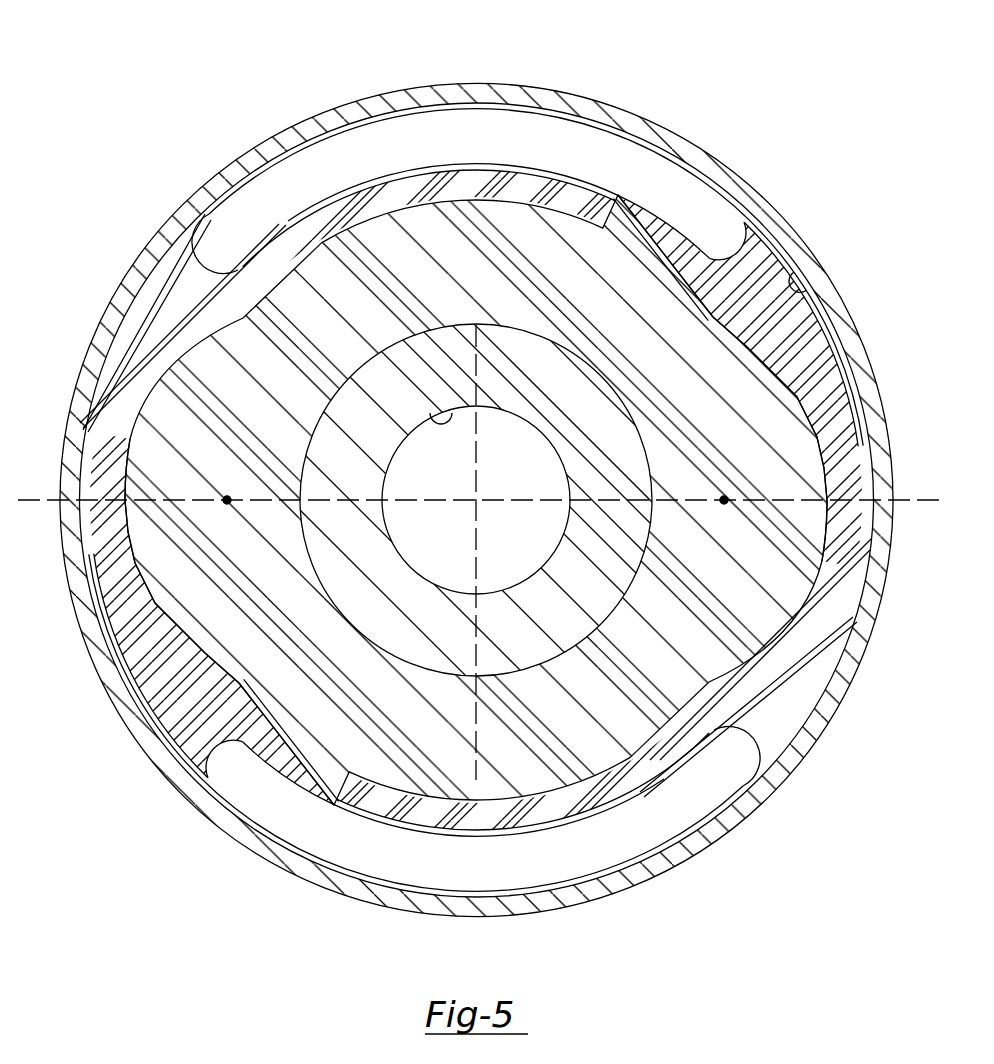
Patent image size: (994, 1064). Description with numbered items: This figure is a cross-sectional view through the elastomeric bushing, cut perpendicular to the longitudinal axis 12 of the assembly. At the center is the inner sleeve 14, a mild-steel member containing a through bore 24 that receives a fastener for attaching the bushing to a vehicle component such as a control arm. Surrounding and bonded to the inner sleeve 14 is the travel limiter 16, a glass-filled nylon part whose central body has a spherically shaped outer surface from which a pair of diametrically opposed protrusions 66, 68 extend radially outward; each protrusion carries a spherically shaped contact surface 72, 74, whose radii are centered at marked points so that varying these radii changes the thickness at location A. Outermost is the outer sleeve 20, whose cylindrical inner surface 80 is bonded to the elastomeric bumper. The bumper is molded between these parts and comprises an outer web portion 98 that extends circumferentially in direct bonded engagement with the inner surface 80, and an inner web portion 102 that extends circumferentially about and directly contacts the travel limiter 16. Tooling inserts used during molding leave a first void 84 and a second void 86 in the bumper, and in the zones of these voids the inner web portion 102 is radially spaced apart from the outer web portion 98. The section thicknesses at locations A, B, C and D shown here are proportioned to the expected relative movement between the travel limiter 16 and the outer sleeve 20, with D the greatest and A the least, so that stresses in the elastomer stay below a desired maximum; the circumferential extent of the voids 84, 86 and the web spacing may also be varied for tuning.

The longitudinal axis 12 is at (478, 503).
The inner sleeve 14 is at (553, 417).
The travel limiter 16 is at (270, 722).
The outer sleeve 20 is at (586, 102).
The through bore 24 is at (452, 414).
The protrusion 66 is at (150, 543).
The protrusion 68 is at (777, 578).
The spherically shaped contact surface 72 is at (160, 620).
The spherically shaped contact surface 74 is at (833, 447).
The cylindrical inner surface 80 is at (800, 285).
The first void 84 is at (382, 164).
The second void 86 is at (374, 858).
The outer web portion 98 is at (503, 112).
The inner web portion 102 is at (515, 186).